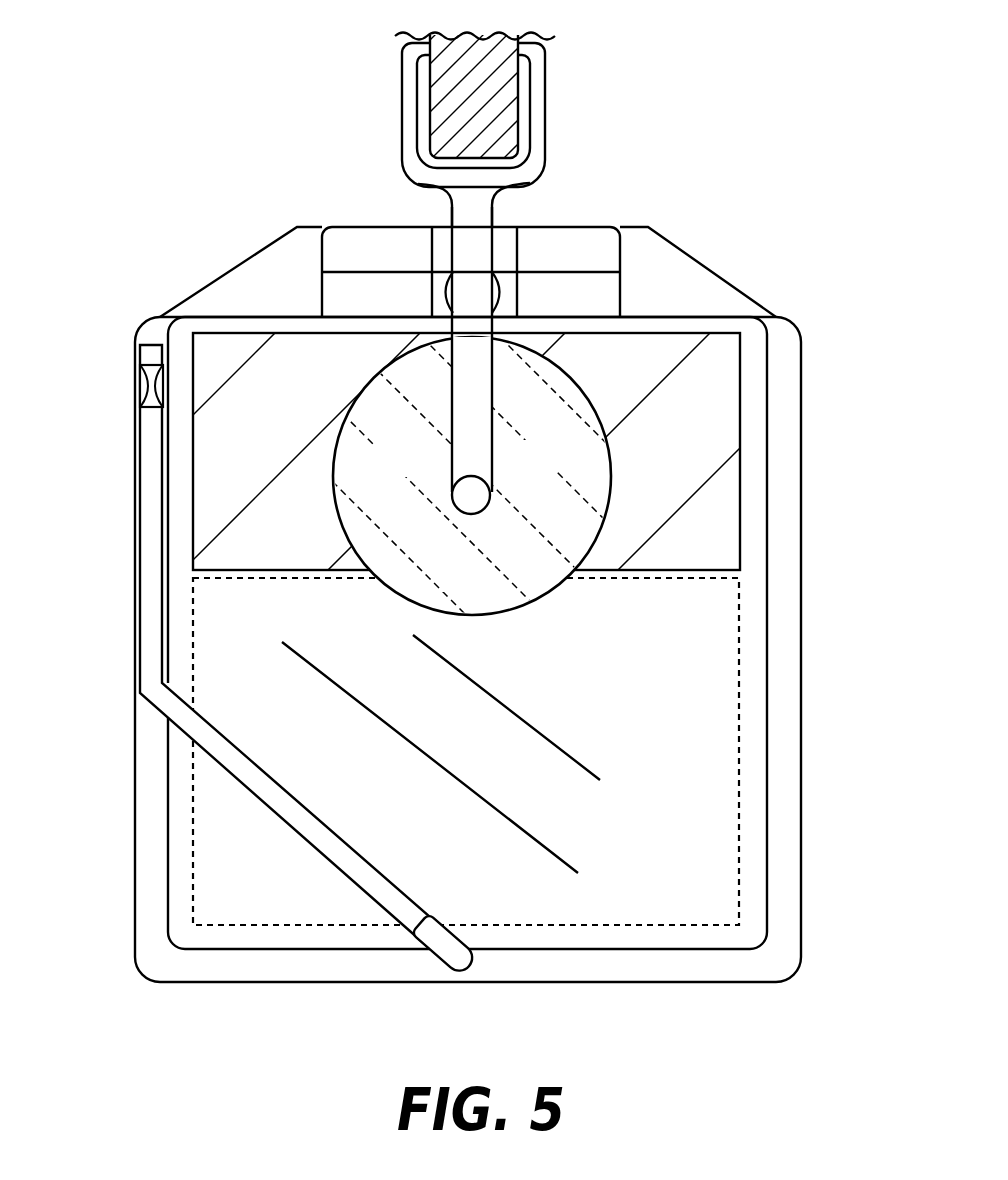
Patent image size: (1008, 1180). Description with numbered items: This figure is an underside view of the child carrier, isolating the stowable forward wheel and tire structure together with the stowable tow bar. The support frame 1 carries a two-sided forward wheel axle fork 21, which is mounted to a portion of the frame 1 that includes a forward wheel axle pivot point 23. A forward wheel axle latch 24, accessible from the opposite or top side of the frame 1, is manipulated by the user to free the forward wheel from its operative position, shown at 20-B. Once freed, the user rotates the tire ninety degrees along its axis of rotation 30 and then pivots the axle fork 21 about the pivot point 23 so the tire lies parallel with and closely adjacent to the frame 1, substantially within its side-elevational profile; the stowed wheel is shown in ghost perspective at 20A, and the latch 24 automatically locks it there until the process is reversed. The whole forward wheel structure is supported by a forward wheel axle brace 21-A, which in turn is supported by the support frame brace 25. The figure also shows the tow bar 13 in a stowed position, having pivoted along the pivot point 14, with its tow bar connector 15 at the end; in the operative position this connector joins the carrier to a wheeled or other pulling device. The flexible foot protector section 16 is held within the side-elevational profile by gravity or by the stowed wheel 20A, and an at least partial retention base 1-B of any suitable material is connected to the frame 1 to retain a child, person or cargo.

The frame 1 is at (136, 766).
The partial retention base 1-B is at (715, 740).
The tow bar 13 is at (358, 864).
The tow bar pivot 14 is at (138, 392).
The tow bar connector 15 is at (443, 938).
The foot protector 16 is at (253, 548).
The forward wheel in stowed position 20A is at (417, 474).
The forward wheel in operative position 20-B is at (435, 92).
The forward wheel axle fork 21 is at (537, 125).
The forward wheel axle brace 21-A is at (478, 445).
The forward wheel axle pivot point 23 is at (475, 292).
The forward wheel axle latch 24 is at (497, 292).
The support frame brace 25 is at (355, 238).
The axis of rotation 30 is at (472, 498).